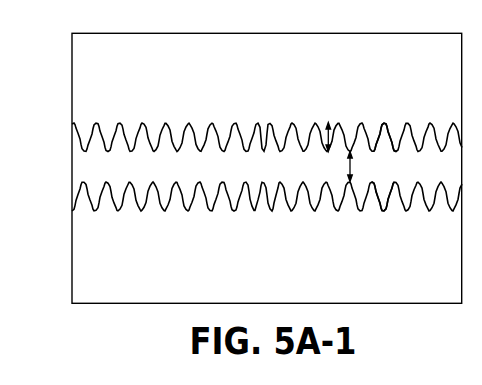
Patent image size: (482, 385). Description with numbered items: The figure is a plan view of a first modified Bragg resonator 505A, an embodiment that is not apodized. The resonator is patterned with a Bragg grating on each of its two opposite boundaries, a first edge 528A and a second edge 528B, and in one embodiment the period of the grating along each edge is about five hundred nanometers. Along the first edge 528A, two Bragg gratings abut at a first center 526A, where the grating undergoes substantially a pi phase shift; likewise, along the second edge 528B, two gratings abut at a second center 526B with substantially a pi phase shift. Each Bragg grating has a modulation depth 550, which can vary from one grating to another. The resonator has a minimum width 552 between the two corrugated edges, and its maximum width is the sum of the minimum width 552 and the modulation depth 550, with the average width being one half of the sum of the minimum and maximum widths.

The first modified Bragg resonator 505A is at (253, 18).
The first center 526A is at (262, 127).
The second center 526B is at (262, 202).
The first edge 528A is at (384, 120).
The second edge 528B is at (384, 213).
The modulation depth 550 is at (330, 131).
The minimum width 552 is at (348, 166).